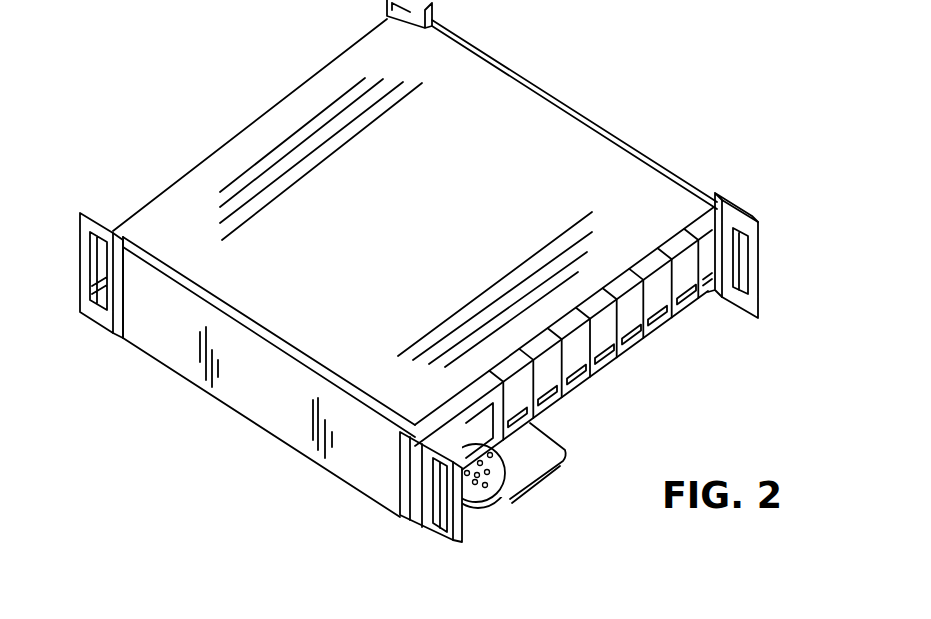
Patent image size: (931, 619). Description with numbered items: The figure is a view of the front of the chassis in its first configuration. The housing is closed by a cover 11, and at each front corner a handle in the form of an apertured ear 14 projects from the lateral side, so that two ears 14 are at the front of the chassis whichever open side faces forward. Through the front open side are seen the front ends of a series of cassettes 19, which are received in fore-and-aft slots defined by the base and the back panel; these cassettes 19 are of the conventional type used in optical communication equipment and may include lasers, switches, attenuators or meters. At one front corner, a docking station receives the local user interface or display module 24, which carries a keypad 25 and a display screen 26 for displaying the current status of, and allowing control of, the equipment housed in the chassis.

The cover 11 is at (503, 100).
The apertured ear 14 is at (767, 233).
The cassettes 19 is at (658, 327).
The local user interface or display module 24 is at (469, 511).
The keypad 25 is at (497, 485).
The display screen 26 is at (483, 430).